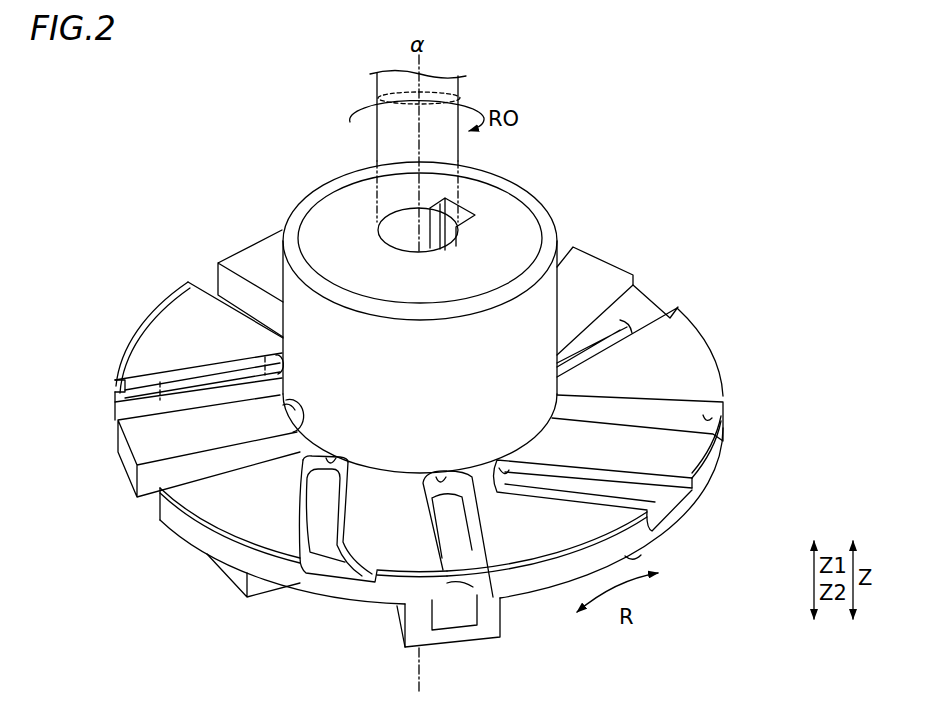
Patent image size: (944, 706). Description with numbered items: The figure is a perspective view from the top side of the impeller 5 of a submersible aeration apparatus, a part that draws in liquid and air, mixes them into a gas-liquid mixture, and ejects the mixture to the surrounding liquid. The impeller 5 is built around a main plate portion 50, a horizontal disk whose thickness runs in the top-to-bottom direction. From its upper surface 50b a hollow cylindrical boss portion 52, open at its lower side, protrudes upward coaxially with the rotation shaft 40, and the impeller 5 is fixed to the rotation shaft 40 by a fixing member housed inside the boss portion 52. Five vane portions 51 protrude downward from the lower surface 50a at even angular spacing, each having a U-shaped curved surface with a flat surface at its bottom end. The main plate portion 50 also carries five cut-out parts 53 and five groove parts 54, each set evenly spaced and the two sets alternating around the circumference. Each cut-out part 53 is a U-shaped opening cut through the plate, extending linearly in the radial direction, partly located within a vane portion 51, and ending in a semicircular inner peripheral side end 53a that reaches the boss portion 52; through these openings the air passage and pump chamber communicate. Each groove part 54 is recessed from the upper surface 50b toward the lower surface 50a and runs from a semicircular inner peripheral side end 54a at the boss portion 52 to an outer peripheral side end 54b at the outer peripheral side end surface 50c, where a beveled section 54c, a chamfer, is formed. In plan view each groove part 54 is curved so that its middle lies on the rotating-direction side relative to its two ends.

The impeller 5 is at (95, 196).
The rotation shaft 40 is at (376, 160).
The main plate portion 50 is at (109, 368).
The lower surface 50a is at (180, 541).
The upper surface 50b is at (150, 352).
The outer peripheral side end surface 50c is at (177, 522).
The vane portion 51 is at (215, 583).
The boss portion 52 is at (288, 207).
The cut-out part 53 is at (223, 283).
The inner peripheral side end 53a is at (278, 431).
The groove part 54 is at (181, 377).
The inner peripheral side end 54a is at (328, 460).
The outer peripheral side end 54b is at (113, 391).
The beveled section 54c is at (113, 407).